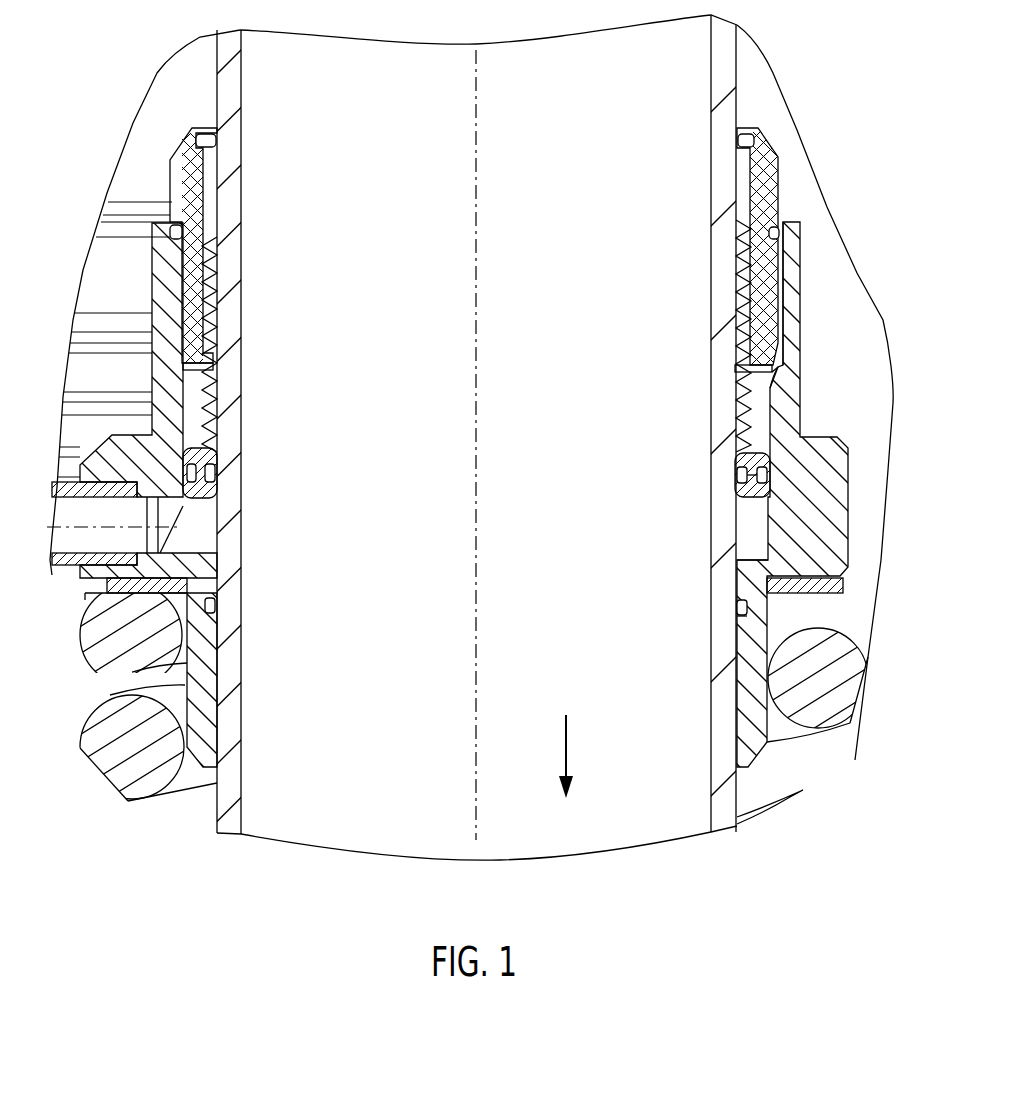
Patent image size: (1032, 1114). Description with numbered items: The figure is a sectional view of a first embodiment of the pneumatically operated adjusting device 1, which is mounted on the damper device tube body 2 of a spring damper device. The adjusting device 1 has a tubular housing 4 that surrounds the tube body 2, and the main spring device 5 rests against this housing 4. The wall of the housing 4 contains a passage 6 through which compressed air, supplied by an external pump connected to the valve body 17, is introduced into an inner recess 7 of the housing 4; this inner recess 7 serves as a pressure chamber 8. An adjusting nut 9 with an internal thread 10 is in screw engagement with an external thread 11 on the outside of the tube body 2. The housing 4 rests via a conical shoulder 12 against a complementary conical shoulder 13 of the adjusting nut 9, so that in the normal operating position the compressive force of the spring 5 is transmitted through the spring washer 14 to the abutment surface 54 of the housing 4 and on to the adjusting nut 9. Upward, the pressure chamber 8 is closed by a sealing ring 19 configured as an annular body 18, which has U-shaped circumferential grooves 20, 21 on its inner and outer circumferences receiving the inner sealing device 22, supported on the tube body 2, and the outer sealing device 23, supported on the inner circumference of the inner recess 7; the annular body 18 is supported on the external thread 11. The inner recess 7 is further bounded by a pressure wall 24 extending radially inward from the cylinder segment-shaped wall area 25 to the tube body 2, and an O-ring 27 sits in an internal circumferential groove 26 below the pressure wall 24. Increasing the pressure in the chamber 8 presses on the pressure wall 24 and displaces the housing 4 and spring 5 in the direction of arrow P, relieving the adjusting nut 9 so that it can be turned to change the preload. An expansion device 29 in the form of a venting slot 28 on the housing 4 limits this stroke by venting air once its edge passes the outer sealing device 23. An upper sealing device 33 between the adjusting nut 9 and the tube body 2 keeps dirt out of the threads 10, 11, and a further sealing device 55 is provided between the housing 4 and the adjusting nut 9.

The pneumatically operated adjusting device 1 is at (128, 826).
The damper device tube body 2 is at (234, 832).
The housing 4 is at (790, 372).
The main spring device 5 is at (825, 713).
The passage 6 is at (168, 533).
The inner recess 7 is at (207, 532).
The pressure chamber 8 is at (750, 518).
The adjusting nut 9 is at (770, 197).
The internal thread 10 is at (745, 275).
The external thread 11 is at (213, 427).
The conical shoulder 12 is at (797, 343).
The conical shoulder 13 is at (183, 356).
The spring washer 14 is at (777, 587).
The valve body 17 is at (60, 567).
The annular body 18 is at (750, 457).
The sealing ring 19 is at (213, 495).
The circumferential groove 20 is at (740, 472).
The circumferential groove 21 is at (765, 470).
The inner sealing device 22 is at (215, 472).
The outer sealing device 23 is at (755, 463).
The pressure wall 24 is at (750, 558).
The wall area 25 is at (183, 548).
The internal circumferential groove 26 is at (740, 613).
The O-ring 27 is at (740, 605).
The venting slot 28 is at (772, 383).
The expansion device 29 is at (772, 378).
The upper sealing device 33 is at (742, 142).
The abutment surface 54 is at (843, 580).
The sealing device 55 is at (775, 232).
The directional arrow P is at (566, 745).